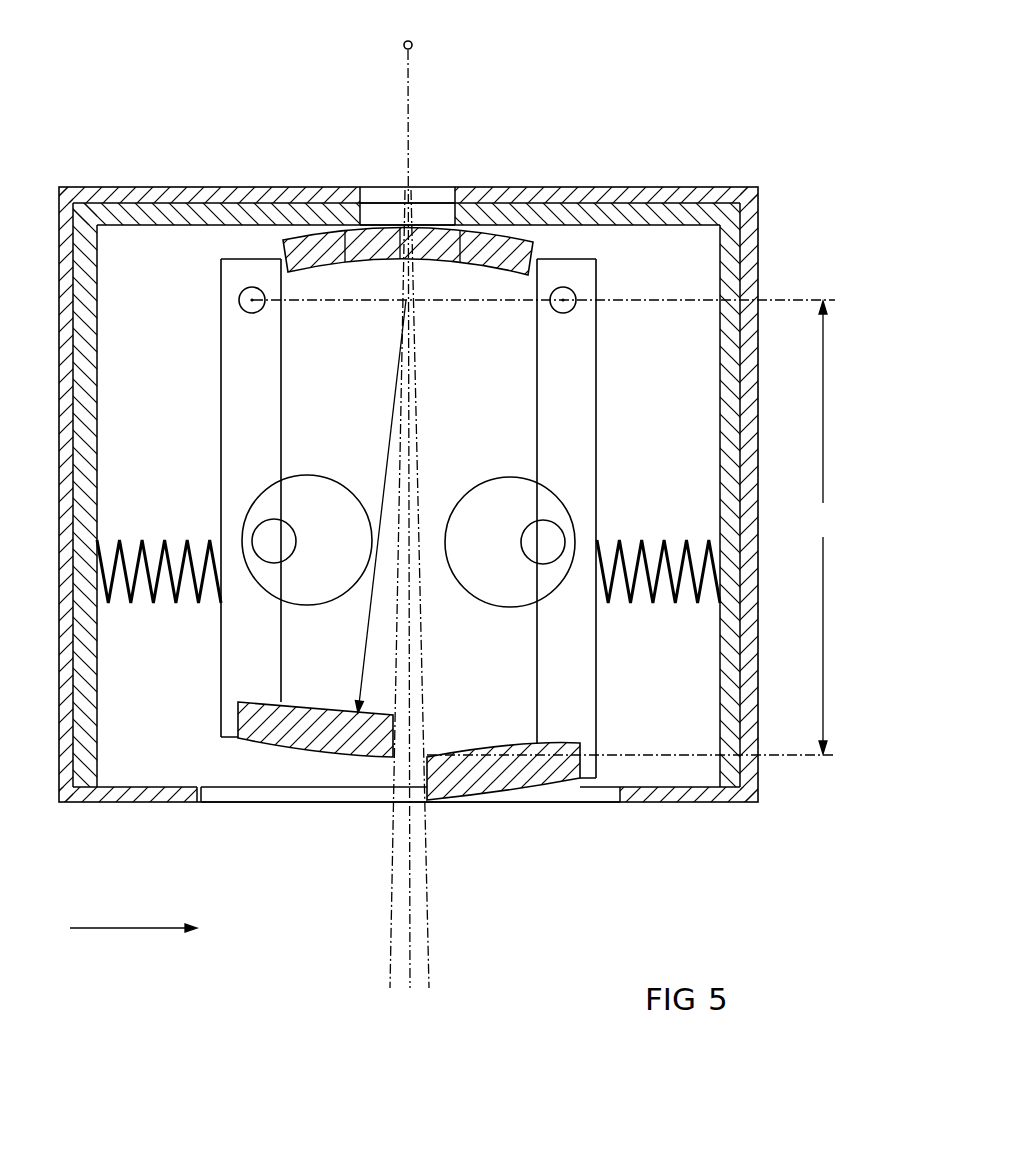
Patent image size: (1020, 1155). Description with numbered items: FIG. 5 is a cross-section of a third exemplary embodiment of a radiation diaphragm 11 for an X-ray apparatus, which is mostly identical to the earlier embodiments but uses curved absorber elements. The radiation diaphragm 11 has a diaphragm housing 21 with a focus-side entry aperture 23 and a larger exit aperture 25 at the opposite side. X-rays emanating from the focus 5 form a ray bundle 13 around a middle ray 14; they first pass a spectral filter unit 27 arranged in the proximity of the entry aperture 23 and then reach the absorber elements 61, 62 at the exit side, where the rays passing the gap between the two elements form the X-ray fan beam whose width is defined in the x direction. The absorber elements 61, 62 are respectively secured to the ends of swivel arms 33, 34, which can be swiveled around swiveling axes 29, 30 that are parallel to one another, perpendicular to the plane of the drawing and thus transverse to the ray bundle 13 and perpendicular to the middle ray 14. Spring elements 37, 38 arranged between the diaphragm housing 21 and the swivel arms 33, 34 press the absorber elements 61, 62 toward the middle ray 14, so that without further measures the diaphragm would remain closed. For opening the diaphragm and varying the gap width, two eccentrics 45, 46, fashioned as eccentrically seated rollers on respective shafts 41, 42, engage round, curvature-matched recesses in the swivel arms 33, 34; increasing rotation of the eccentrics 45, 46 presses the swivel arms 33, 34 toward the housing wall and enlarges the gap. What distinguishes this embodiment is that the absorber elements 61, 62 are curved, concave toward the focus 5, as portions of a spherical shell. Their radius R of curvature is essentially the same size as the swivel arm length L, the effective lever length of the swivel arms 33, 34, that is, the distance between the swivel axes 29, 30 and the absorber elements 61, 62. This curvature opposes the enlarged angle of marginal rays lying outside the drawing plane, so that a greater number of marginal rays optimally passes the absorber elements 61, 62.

The focus 5 is at (414, 44).
The radiation diaphragm 11 is at (447, 501).
The ray bundle 13 is at (420, 905).
The middle ray 14 is at (410, 970).
The diaphragm housing 21 is at (752, 262).
The entry aperture 23 is at (424, 190).
The exit aperture 25 is at (230, 797).
The spectral filter unit 27 is at (437, 234).
The swiveling axis 29 is at (563, 300).
The swiveling axis 30 is at (252, 300).
The swivel arm 33 is at (578, 398).
The swivel arm 34 is at (232, 398).
The spring element 37 is at (660, 598).
The spring element 38 is at (140, 595).
The shaft 41 is at (548, 535).
The shaft 42 is at (276, 544).
The eccentric 45 is at (487, 500).
The eccentric 46 is at (330, 503).
The absorber element 61 is at (490, 770).
The absorber element 62 is at (303, 728).
The radius of curvature R is at (356, 686).
The swivel arm length L is at (544, 527).
The x direction x is at (133, 941).